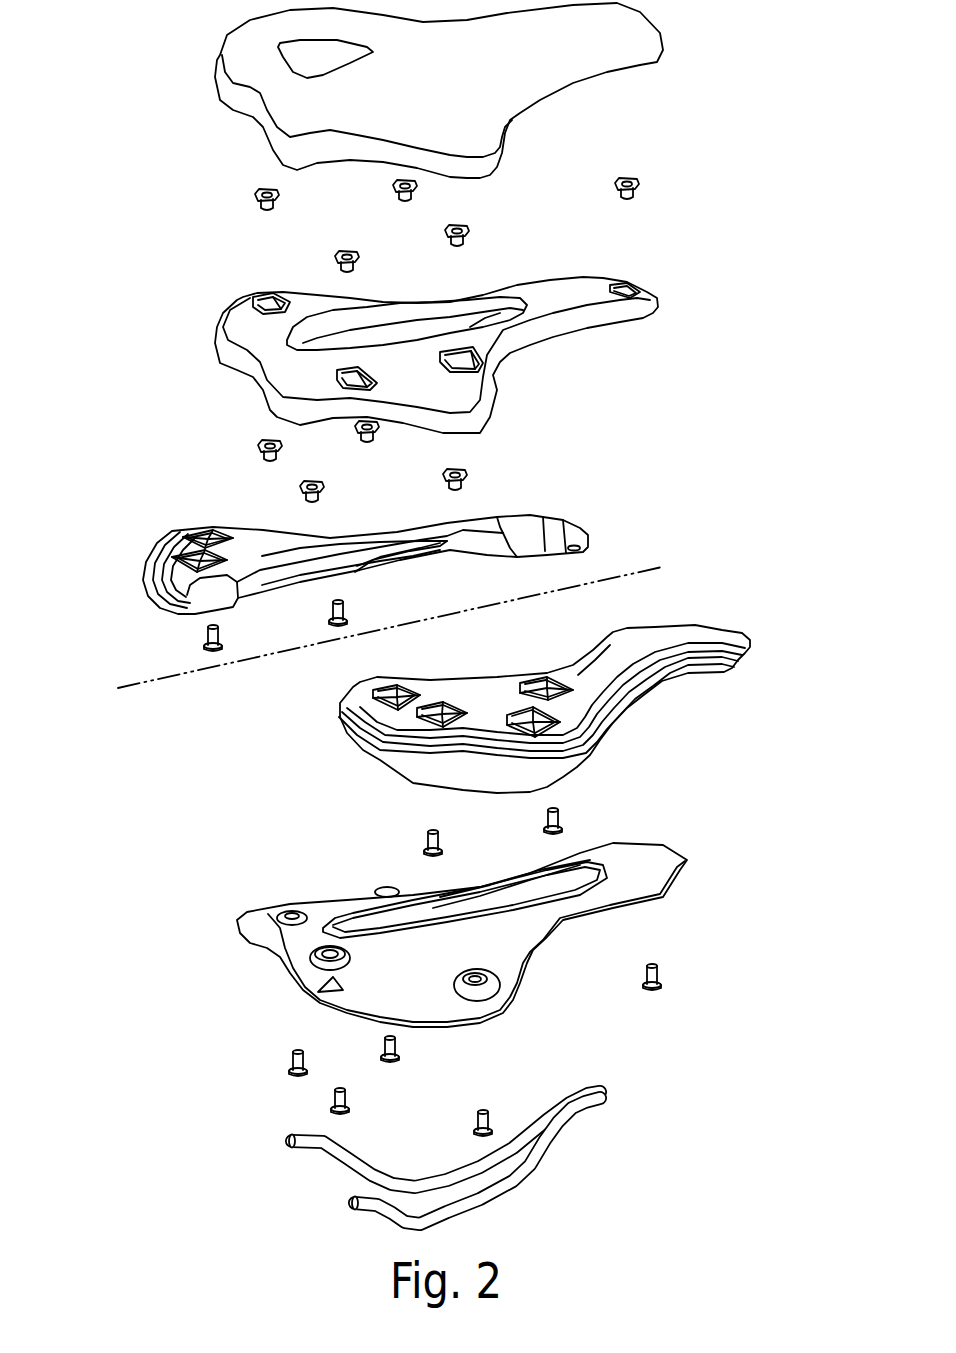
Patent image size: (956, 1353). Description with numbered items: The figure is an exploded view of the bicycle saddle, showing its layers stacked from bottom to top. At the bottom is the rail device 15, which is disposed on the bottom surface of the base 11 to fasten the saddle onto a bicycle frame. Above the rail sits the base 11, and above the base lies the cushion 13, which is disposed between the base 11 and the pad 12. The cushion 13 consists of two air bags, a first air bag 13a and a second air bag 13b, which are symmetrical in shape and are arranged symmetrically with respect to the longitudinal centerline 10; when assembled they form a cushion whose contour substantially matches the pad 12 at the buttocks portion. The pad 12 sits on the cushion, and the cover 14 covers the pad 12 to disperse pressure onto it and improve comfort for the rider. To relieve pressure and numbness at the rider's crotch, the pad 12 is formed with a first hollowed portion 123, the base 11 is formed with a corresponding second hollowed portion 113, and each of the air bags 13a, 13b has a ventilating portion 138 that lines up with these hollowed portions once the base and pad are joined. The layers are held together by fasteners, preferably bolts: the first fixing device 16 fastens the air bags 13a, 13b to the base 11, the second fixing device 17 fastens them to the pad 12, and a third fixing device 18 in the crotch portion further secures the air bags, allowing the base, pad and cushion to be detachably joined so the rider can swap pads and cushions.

The centerline 10 is at (390, 599).
The base 11 is at (442, 935).
The second hollowed portion 113 is at (468, 929).
The pad 12 is at (410, 355).
The first hollowed portion 123 is at (456, 340).
The cushion 13 is at (466, 633).
The first air bag 13a is at (693, 621).
The second air bag 13b is at (379, 547).
The ventilating portion 138 is at (464, 639).
The cover 14 is at (410, 90).
The rail device 15 is at (416, 1158).
The first fixing device 16 is at (308, 793).
The second fixing device 17 is at (263, 430).
The third fixing device 18 is at (733, 584).